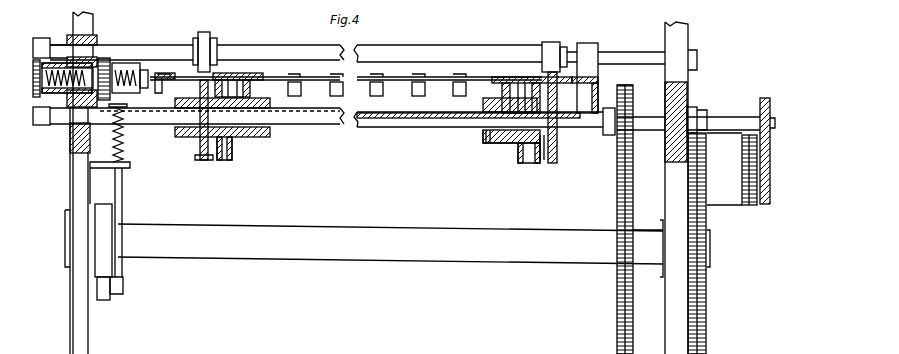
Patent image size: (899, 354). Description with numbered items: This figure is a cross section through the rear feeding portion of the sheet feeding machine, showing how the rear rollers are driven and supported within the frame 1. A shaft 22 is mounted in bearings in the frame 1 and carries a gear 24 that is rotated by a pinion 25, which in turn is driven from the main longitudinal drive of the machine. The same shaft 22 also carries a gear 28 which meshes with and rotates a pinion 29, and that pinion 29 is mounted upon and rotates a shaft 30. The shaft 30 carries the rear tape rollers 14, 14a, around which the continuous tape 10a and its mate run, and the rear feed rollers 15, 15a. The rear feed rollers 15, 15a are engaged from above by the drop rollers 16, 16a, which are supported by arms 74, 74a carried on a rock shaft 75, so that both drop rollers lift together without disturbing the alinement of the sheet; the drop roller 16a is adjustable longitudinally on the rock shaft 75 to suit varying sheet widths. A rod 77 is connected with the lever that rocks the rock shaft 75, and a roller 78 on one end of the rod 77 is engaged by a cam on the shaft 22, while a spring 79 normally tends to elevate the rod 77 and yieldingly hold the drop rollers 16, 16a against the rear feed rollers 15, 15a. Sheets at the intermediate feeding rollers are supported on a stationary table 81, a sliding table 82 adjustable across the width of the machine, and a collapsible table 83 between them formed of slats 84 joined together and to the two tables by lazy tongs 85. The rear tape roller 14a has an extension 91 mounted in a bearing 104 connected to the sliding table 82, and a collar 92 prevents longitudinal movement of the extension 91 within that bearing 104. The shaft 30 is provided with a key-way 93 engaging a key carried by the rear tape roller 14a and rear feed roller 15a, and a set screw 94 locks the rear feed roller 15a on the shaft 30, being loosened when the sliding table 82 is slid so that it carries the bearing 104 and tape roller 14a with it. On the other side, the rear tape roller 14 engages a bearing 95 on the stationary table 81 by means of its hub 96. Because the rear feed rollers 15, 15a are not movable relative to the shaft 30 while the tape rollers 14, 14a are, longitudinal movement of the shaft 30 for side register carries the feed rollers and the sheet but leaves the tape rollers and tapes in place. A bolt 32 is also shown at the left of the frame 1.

The frame 1 is at (68, 164).
The tape 10a is at (545, 160).
The rear tape roller 14 is at (233, 160).
The rear tape roller 14a is at (527, 163).
The rear feed roller 15 is at (203, 160).
The rear feed roller 15a is at (558, 155).
The drop roller 16 is at (204, 32).
The drop roller 16a is at (553, 42).
The shaft 22 is at (641, 236).
The gear 24 is at (707, 296).
The pinion 25 is at (707, 195).
The gear 28 is at (634, 184).
The pinion 29 is at (632, 86).
The shaft 30 is at (413, 128).
The bolt 32 is at (48, 70).
The arm 74 is at (218, 42).
The arm 74a is at (572, 47).
The rock shaft 75 is at (455, 46).
The rod 77 is at (122, 188).
The roller 78 is at (101, 300).
The spring 79 is at (124, 145).
The stationary table 81 is at (238, 72).
The sliding table 82 is at (500, 76).
The collapsible table 83 is at (413, 79).
The slats 84 is at (420, 76).
The lazy tongs 85 is at (398, 88).
The extension 91 is at (500, 143).
The collar 92 is at (486, 140).
The key-way 93 is at (465, 109).
The set screw 94 is at (548, 135).
The bearing 95 is at (268, 138).
The hub 96 is at (272, 137).
The bearing 104 is at (508, 143).